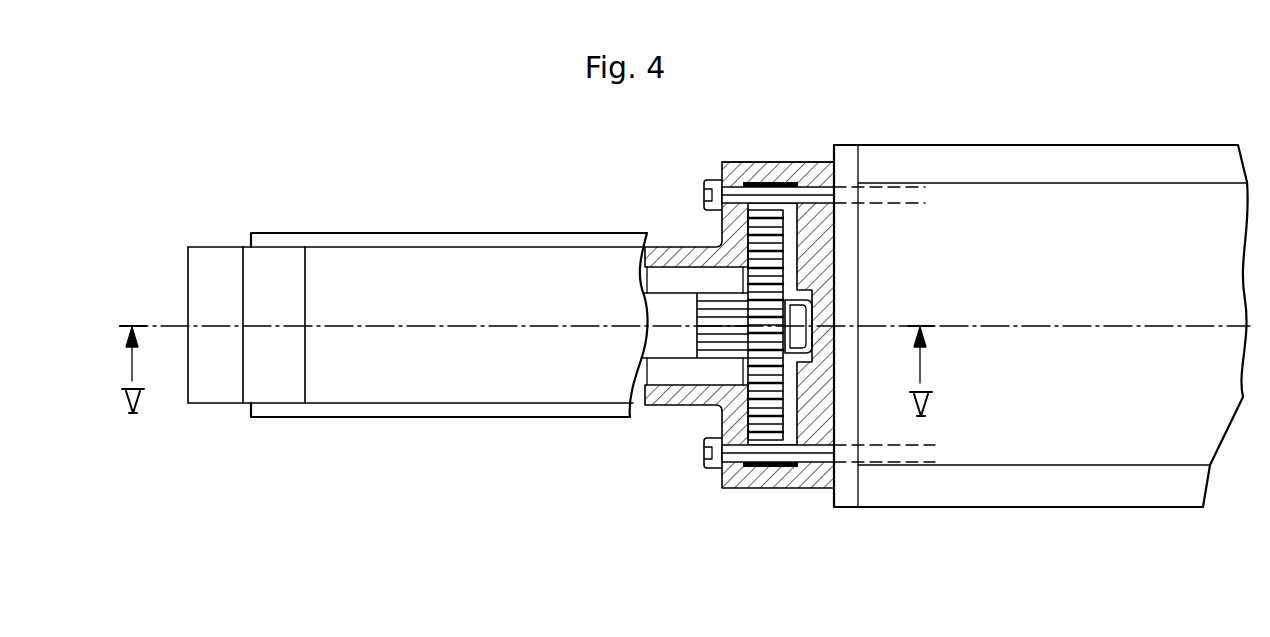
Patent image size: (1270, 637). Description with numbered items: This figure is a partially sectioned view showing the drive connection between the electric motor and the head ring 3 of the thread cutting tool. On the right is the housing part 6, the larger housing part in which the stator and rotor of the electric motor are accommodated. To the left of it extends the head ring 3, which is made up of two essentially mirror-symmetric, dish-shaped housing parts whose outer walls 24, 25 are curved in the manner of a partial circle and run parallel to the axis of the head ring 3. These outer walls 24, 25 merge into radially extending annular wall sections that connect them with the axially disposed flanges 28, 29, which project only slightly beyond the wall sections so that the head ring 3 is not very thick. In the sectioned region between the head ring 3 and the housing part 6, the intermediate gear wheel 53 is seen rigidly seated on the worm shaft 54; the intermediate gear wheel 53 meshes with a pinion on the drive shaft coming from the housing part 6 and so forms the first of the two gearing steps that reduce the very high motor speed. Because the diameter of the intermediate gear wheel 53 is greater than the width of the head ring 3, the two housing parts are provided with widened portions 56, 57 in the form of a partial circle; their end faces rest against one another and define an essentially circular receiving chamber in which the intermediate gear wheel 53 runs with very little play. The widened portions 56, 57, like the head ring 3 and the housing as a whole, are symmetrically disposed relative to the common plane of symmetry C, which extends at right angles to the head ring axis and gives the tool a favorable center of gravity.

The head ring 3 is at (383, 216).
The flange 28 is at (462, 243).
The flange 29 is at (430, 413).
The outer wall 24 is at (548, 262).
The outer wall 25 is at (556, 396).
The worm shaft 54 is at (670, 350).
The intermediate gear wheel 53 is at (708, 465).
The widened portion 56 is at (765, 172).
The widened portion 57 is at (773, 481).
The housing part 6 is at (1060, 446).
The plane of symmetry C is at (1087, 323).